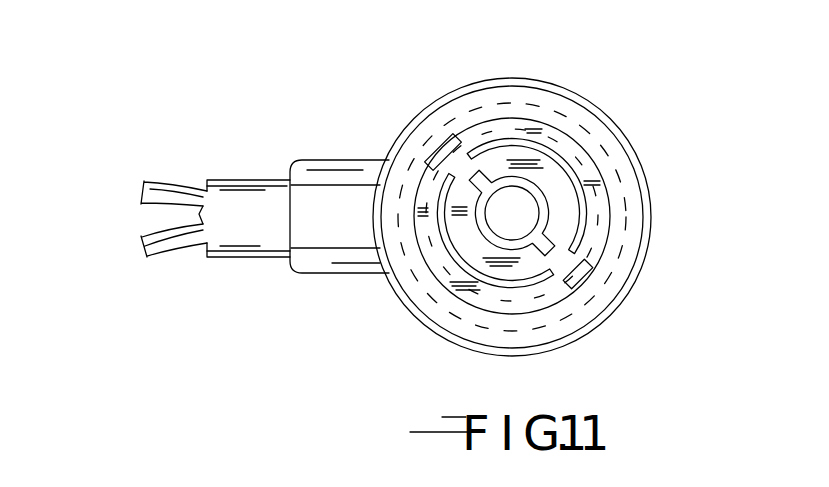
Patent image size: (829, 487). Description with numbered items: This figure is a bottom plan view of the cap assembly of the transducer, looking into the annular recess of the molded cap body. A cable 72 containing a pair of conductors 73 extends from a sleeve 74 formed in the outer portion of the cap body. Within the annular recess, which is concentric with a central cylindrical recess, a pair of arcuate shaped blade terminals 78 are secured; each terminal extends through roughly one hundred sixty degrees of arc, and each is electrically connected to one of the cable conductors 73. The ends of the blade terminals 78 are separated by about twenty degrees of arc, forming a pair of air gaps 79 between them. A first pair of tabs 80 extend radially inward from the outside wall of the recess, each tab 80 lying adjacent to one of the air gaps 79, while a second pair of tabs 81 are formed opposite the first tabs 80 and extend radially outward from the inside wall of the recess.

The cable 72 is at (247, 178).
The conductors 73 is at (160, 231).
The sleeve 74 is at (319, 160).
The blade terminals 78 is at (579, 178).
The air gaps 79 is at (450, 167).
The first pair of tabs 80 is at (465, 135).
The second pair of tabs 81 is at (487, 175).